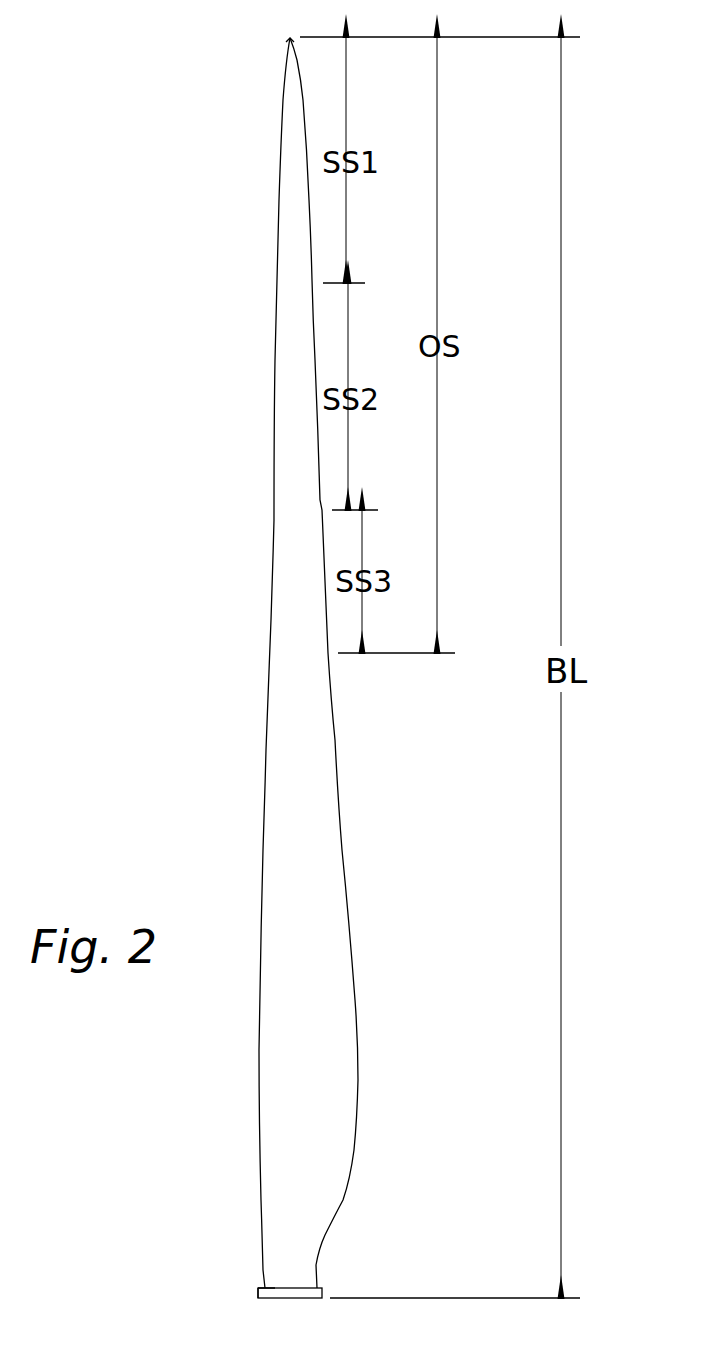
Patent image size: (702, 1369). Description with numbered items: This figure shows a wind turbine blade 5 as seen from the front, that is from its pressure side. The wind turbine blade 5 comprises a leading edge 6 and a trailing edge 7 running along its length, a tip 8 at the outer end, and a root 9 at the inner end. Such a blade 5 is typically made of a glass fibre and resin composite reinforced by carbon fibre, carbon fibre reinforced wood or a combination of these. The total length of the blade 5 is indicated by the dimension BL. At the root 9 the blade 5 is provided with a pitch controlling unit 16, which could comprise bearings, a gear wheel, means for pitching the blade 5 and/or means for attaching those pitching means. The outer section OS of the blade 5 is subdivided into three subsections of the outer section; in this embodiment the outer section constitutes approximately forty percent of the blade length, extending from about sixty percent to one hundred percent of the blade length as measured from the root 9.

The wind turbine blade 5 is at (255, 681).
The leading edge 6 is at (271, 617).
The trailing edge 7 is at (335, 742).
The tip 8 is at (292, 37).
The root 9 is at (288, 1299).
The pitch controlling unit 16 is at (270, 1292).